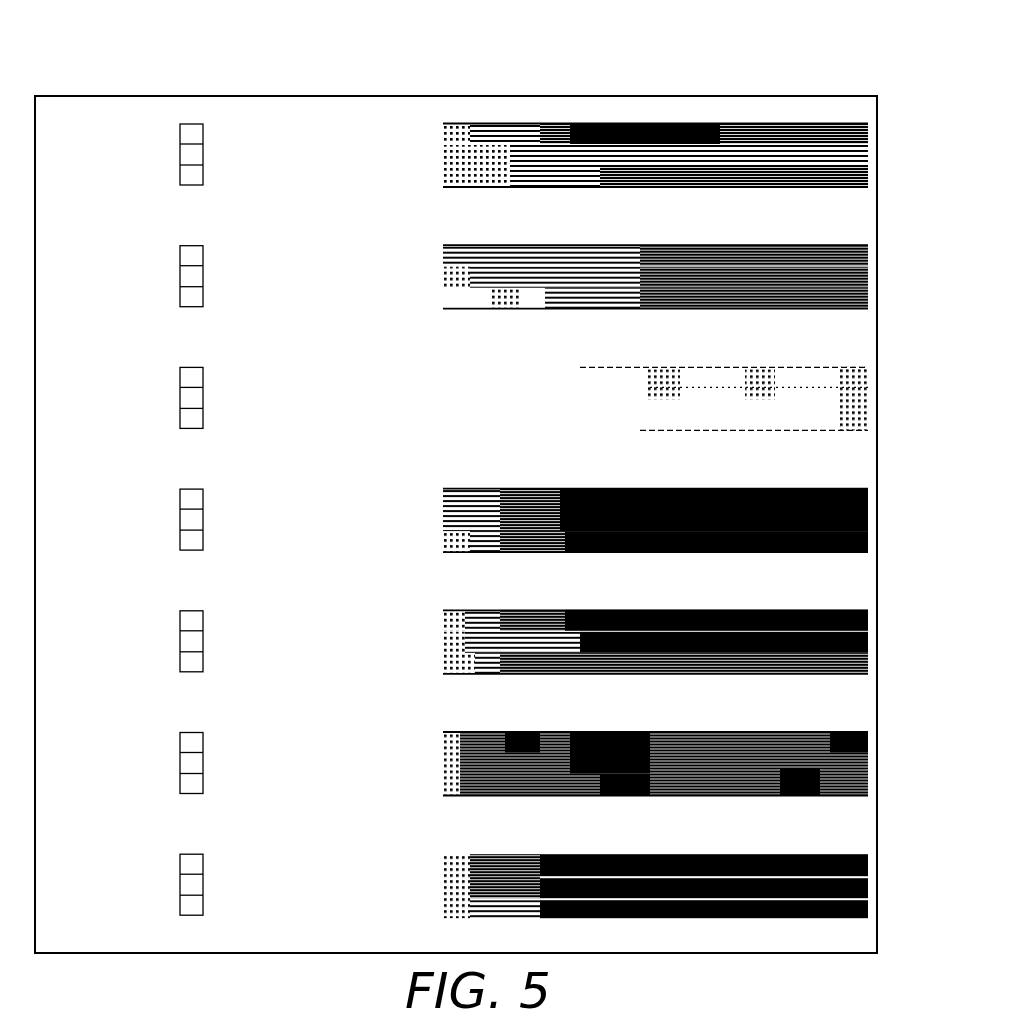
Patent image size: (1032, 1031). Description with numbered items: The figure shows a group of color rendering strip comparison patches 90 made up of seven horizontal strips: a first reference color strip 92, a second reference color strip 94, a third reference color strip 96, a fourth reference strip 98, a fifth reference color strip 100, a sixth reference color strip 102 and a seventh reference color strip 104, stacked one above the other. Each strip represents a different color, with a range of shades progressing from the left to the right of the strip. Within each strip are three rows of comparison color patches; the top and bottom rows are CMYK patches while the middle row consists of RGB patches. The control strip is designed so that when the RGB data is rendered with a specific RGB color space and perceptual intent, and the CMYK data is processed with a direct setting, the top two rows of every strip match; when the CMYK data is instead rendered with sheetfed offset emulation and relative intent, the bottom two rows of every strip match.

The group of color rendering strip comparison patches 90 is at (822, 67).
The first reference color strip 92 is at (836, 114).
The second reference color strip 94 is at (490, 264).
The third reference color strip 96 is at (490, 385).
The fourth reference strip 98 is at (490, 507).
The fifth reference color strip 100 is at (497, 629).
The sixth reference color strip 102 is at (497, 751).
The seventh reference color strip 104 is at (497, 872).